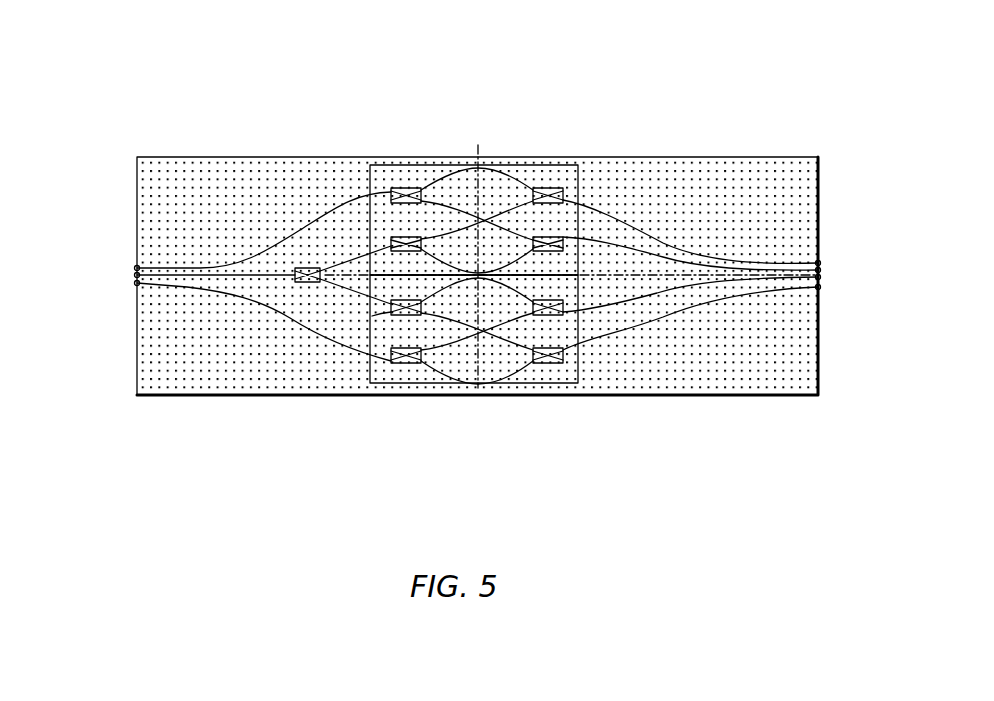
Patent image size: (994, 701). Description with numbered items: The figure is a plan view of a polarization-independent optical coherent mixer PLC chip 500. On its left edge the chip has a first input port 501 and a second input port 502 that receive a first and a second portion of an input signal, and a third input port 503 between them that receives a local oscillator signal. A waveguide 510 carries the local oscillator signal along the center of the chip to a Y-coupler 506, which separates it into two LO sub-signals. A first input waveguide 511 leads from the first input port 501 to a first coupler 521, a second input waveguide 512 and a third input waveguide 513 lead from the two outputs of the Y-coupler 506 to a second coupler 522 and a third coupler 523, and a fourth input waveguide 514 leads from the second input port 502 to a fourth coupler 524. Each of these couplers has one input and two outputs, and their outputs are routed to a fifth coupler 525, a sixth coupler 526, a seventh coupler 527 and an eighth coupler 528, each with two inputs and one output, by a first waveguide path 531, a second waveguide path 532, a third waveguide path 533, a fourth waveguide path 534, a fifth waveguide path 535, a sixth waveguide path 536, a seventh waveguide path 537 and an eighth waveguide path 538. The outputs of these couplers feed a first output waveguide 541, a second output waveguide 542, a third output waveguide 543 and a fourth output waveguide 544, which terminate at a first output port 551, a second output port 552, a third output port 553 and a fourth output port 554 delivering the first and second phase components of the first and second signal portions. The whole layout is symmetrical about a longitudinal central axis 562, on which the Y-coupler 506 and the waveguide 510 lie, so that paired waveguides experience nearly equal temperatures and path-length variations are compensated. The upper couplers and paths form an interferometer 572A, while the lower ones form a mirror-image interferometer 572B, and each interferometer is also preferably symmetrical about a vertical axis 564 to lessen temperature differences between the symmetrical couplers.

The PLC chip 500 is at (714, 150).
The first input port 501 is at (137, 268).
The second input port 502 is at (137, 283).
The third input port 503 is at (137, 275).
The Y-coupler 506 is at (308, 283).
The waveguide 510 is at (211, 276).
The first input waveguide 511 is at (275, 248).
The second input waveguide 512 is at (340, 264).
The third input waveguide 513 is at (372, 312).
The fourth input waveguide 514 is at (273, 301).
The first coupler 521 is at (391, 199).
The second coupler 522 is at (391, 239).
The third coupler 523 is at (391, 351).
The fourth coupler 524 is at (391, 361).
The fifth coupler 525 is at (563, 191).
The sixth coupler 526 is at (565, 200).
The seventh coupler 527 is at (622, 333).
The eighth coupler 528 is at (563, 361).
The first waveguide path 531 is at (448, 179).
The second waveguide path 532 is at (469, 208).
The third waveguide path 533 is at (499, 199).
The fourth waveguide path 534 is at (513, 275).
The fifth waveguide path 535 is at (513, 275).
The sixth waveguide path 536 is at (497, 345).
The seventh waveguide path 537 is at (459, 341).
The eighth waveguide path 538 is at (445, 372).
The first output waveguide 541 is at (653, 231).
The second output waveguide 542 is at (718, 259).
The third output waveguide 543 is at (683, 308).
The fourth output waveguide 544 is at (760, 292).
The first output port 551 is at (818, 263).
The second output port 552 is at (818, 270).
The third output port 553 is at (818, 277).
The fourth output port 554 is at (818, 287).
The longitudinal central axis 562 is at (615, 276).
The vertical axis 564 is at (479, 140).
The interferometer 572A is at (366, 180).
The interferometer 572B is at (582, 372).